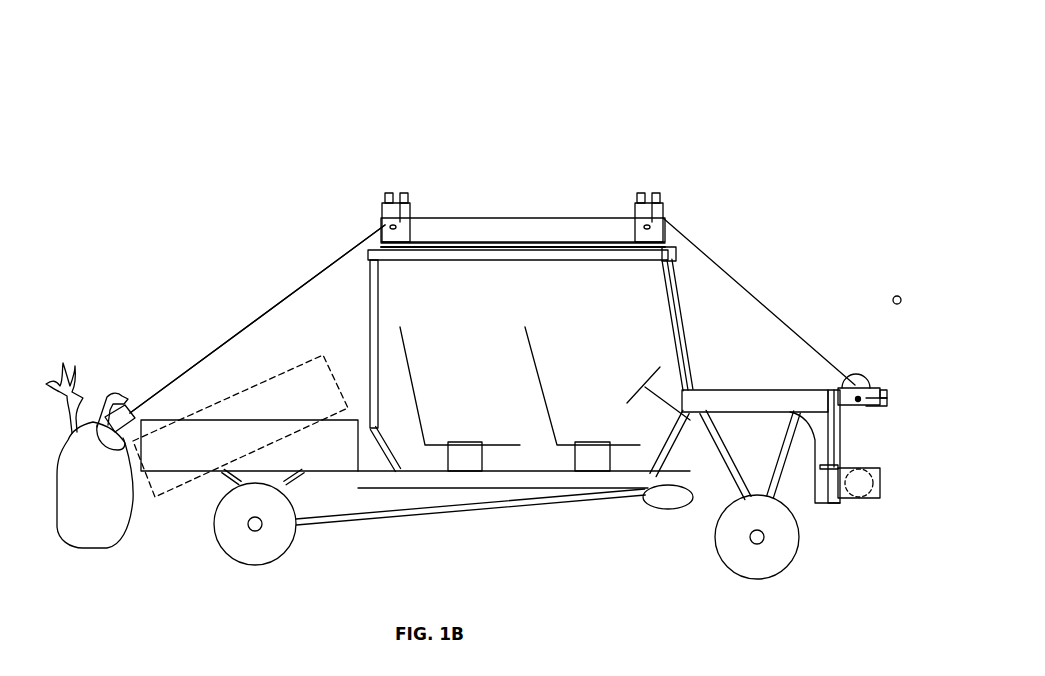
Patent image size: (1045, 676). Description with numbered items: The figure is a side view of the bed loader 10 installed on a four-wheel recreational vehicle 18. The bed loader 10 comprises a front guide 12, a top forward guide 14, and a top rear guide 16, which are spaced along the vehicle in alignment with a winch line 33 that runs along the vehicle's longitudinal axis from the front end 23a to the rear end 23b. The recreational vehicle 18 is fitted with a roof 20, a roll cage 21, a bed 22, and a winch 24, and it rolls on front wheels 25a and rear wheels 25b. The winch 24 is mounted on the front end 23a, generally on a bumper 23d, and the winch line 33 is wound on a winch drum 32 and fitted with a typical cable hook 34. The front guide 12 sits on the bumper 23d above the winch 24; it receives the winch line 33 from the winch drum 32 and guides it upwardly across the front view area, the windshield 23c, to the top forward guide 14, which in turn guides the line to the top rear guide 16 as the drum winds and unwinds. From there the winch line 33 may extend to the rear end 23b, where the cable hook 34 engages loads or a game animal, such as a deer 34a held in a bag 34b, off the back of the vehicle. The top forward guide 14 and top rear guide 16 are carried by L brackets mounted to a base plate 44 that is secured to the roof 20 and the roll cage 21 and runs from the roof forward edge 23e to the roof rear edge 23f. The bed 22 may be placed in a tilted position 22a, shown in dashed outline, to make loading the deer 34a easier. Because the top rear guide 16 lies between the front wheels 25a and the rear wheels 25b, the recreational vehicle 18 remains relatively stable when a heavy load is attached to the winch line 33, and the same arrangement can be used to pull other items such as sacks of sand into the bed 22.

The bed loader 10 is at (720, 97).
The front guide 12 is at (848, 368).
The top forward guide 14 is at (647, 190).
The top rear guide 16 is at (407, 182).
The recreational vehicle 18 is at (280, 215).
The roof 20 is at (580, 258).
The roll cage 21 is at (380, 291).
The bed 22 is at (315, 453).
The tilted position 22a is at (278, 373).
The front end 23a is at (850, 468).
The rear end 23b is at (120, 412).
The windshield 23c is at (680, 290).
The bumper 23d is at (830, 493).
The roof forward edge 23e is at (670, 223).
The roof rear edge 23f is at (365, 248).
The winch 24 is at (882, 488).
The front wheels 25a is at (723, 540).
The rear wheels 25b is at (268, 553).
The winch drum 32 is at (862, 487).
The winch line 33 is at (203, 357).
The cable hook 34 is at (122, 438).
The deer 34a is at (70, 377).
The bag 34b is at (107, 535).
The base plate 44 is at (512, 245).